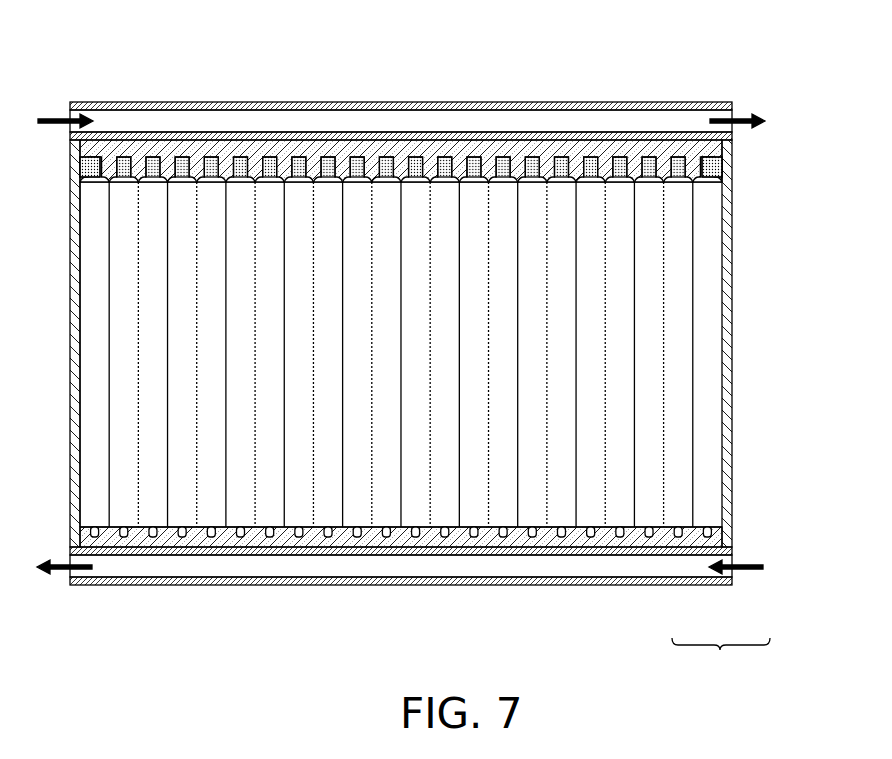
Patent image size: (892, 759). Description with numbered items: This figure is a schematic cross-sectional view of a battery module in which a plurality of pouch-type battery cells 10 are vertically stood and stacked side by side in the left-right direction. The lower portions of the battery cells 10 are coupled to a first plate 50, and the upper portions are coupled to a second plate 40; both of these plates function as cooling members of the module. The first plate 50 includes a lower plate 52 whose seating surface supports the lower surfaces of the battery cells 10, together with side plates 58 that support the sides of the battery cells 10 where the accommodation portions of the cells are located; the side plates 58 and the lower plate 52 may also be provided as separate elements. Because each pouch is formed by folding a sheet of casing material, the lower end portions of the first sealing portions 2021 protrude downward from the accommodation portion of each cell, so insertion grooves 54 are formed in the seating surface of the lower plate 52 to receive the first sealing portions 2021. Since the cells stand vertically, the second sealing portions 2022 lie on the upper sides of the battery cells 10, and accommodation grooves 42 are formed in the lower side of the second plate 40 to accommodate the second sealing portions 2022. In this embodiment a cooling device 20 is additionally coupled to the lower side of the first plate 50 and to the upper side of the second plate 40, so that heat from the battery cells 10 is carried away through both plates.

The battery cell 10 is at (710, 358).
The cooling device 20 is at (117, 102).
The second plate 40 is at (605, 155).
The accommodation groove 42 is at (552, 158).
The first plate 50 is at (721, 660).
The lower plate 52 is at (668, 542).
The insertion groove 54 is at (537, 535).
The side plate 58 is at (732, 445).
The first sealing portion 2021 is at (620, 532).
The second sealing portion 2022 is at (722, 170).